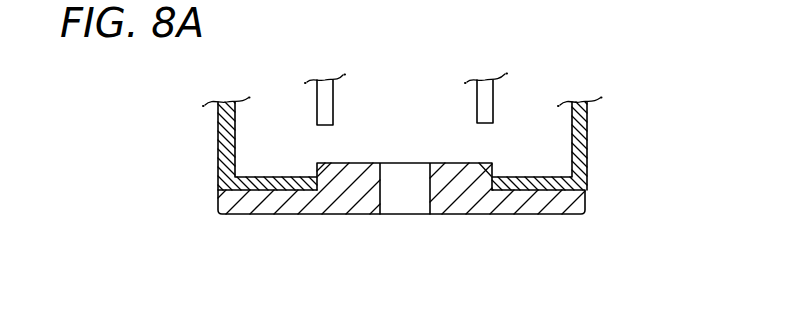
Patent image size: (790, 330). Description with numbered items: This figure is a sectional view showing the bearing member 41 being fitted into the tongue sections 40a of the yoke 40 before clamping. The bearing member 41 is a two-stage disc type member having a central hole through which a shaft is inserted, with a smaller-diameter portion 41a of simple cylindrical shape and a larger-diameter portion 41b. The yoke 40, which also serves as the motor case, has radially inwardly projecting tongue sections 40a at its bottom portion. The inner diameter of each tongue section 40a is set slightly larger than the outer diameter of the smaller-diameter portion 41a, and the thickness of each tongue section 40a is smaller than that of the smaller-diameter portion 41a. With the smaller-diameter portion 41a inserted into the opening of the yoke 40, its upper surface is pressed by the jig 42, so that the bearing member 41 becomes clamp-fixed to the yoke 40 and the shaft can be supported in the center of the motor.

The yoke 40 is at (588, 140).
The tongue sections 40a is at (513, 176).
The bearing member 41 is at (467, 224).
The smaller-diameter portion 41a is at (480, 172).
The larger-diameter portion 41b is at (586, 197).
The jig 42 is at (493, 90).